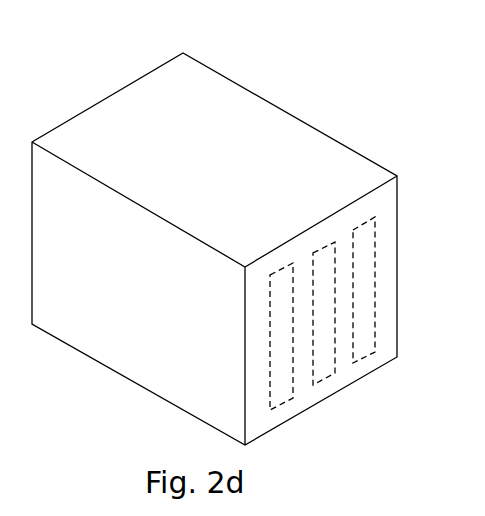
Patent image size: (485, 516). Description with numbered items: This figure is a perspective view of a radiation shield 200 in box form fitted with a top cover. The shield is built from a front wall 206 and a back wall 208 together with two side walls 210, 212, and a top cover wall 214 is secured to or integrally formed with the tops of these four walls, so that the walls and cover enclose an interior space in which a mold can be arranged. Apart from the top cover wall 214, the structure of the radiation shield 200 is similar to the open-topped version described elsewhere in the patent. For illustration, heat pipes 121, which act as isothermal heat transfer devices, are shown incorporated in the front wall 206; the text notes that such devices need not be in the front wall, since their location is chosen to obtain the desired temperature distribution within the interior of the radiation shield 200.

The radiation shield 200 is at (120, 72).
The back wall 208 is at (86, 130).
The top cover wall 214 is at (242, 98).
The side wall 210 is at (328, 157).
The side wall 212 is at (117, 358).
The front wall 206 is at (330, 387).
The heat pipes 121 is at (375, 280).